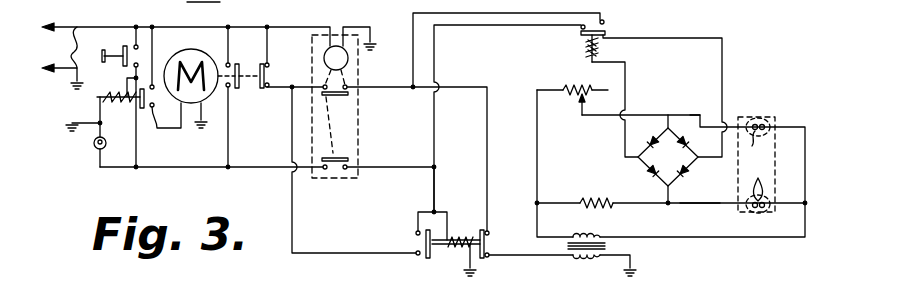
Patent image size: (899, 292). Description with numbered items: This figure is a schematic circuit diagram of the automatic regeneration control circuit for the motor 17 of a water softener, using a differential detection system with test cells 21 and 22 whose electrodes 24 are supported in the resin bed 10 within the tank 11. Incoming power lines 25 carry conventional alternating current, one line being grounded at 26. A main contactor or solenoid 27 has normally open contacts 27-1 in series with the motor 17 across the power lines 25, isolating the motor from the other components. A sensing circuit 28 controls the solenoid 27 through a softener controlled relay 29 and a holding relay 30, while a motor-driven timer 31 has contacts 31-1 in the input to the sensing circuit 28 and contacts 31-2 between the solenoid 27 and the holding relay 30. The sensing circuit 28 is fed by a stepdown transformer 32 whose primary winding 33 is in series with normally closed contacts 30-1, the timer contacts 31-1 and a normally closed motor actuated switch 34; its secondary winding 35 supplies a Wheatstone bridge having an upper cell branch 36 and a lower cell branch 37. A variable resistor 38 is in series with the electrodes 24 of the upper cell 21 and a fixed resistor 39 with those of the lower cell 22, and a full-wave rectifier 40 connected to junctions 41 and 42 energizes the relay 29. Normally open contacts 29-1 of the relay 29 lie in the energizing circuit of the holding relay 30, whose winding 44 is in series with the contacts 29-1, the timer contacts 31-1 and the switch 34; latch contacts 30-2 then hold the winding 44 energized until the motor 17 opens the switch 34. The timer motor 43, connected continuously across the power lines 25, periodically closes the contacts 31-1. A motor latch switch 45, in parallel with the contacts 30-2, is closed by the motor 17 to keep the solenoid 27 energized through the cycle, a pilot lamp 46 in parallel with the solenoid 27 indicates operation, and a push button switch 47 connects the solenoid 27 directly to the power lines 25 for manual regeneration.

The resin bed 10 is at (184, 7).
The tank 11 is at (771, 165).
The motor 17 is at (197, 57).
The test cell 21 is at (770, 117).
The test cell 22 is at (756, 213).
The electrodes 24 is at (759, 173).
The power lines 25 is at (72, 44).
The ground 26 is at (72, 89).
The main contactor or solenoid 27 is at (120, 106).
The normally open contacts 27-1 is at (157, 128).
The sensing circuit 28 is at (537, 84).
The softener controlled relay 29 is at (578, 48).
The normally open contacts 29-1 is at (606, 26).
The holding relay 30 is at (451, 229).
The normally closed contacts 30-1 is at (490, 246).
The latch contacts 30-2 is at (420, 243).
The motor-driven timer 31 is at (360, 112).
The timer contacts 31-1 is at (348, 84).
The timer contacts 31-2 is at (335, 176).
The stepdown transformer 32 is at (611, 246).
The primary winding 33 is at (586, 259).
The motor actuated switch 34 is at (268, 70).
The secondary winding 35 is at (590, 234).
The upper cell branch 36 is at (690, 114).
The lower cell branch 37 is at (690, 204).
The variable resistor 38 is at (574, 98).
The fixed resistor 39 is at (600, 200).
The full-wave rectifier 40 is at (676, 167).
The junction 41 is at (668, 114).
The junction 42 is at (666, 205).
The timer motor 43 is at (323, 56).
The relay winding 44 is at (457, 238).
The motor latch switch 45 is at (233, 90).
The pilot lamp 46 is at (93, 148).
The push button switch 47 is at (127, 45).